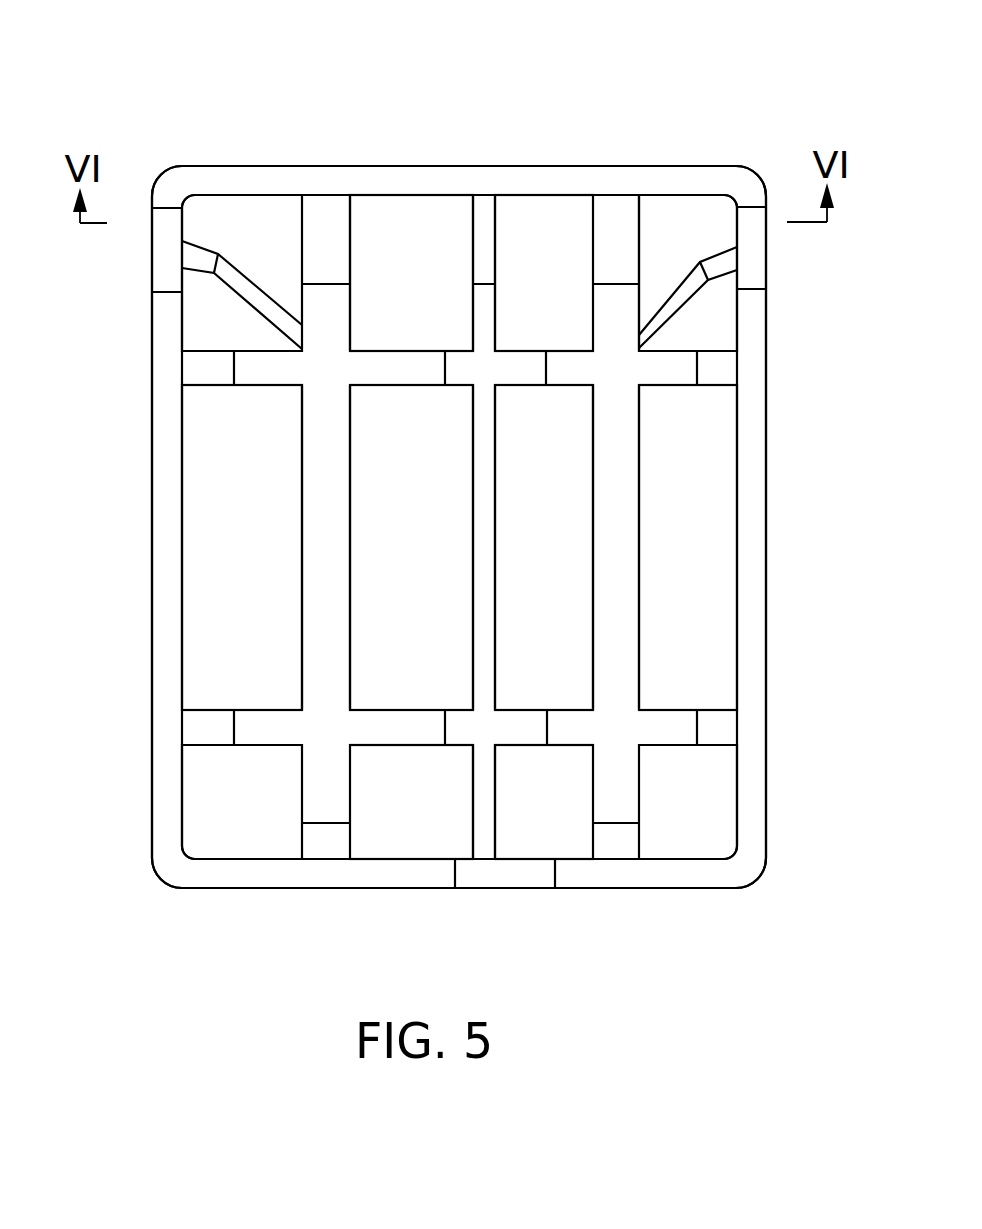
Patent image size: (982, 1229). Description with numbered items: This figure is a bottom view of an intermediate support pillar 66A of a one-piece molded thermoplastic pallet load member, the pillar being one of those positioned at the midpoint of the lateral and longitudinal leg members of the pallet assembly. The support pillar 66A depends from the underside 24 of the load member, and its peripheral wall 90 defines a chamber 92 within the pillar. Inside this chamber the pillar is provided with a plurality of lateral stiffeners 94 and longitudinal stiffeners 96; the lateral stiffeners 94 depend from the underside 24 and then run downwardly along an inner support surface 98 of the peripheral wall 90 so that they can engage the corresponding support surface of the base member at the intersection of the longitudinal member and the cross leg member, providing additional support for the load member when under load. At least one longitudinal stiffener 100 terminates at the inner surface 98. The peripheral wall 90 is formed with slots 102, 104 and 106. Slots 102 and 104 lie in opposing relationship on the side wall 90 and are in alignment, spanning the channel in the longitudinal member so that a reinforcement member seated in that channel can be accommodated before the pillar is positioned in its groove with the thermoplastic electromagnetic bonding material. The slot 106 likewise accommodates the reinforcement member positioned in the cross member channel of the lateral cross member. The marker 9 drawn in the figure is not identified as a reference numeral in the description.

The support pillar 66A is at (224, 112).
The cell partition wall 9 is at (687, 383).
The lower surface 24 is at (702, 811).
The peripheral wall 90 is at (168, 571).
The chamber 92 is at (182, 473).
The lateral stiffeners 94 is at (362, 237).
The longitudinal stiffeners 96 is at (310, 477).
The inner support surface 98 is at (198, 262).
The longitudinal stiffener 100 is at (495, 250).
The slot 102 is at (158, 251).
The slot 104 is at (753, 247).
The slot 106 is at (508, 880).